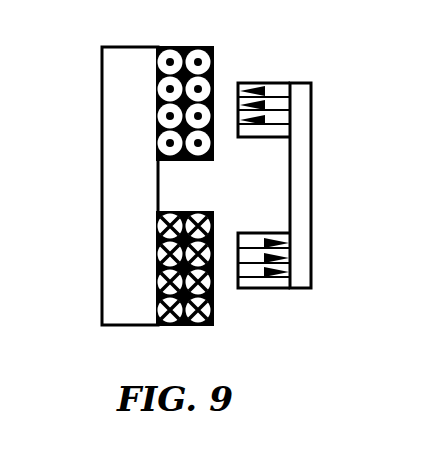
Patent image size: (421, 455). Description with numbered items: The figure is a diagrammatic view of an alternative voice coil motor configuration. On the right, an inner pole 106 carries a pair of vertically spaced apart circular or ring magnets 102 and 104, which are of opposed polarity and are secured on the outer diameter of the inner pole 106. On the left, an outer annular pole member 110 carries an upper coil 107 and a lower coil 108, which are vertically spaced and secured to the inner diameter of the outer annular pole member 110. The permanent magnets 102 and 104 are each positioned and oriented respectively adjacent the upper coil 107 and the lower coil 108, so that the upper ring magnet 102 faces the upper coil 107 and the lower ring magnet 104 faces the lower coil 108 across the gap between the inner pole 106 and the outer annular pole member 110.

The ring magnet 102 is at (272, 88).
The ring magnet 104 is at (269, 289).
The inner pole 106 is at (302, 200).
The upper coil 107 is at (213, 47).
The lower coil 108 is at (188, 326).
The outer annular pole member 110 is at (118, 193).